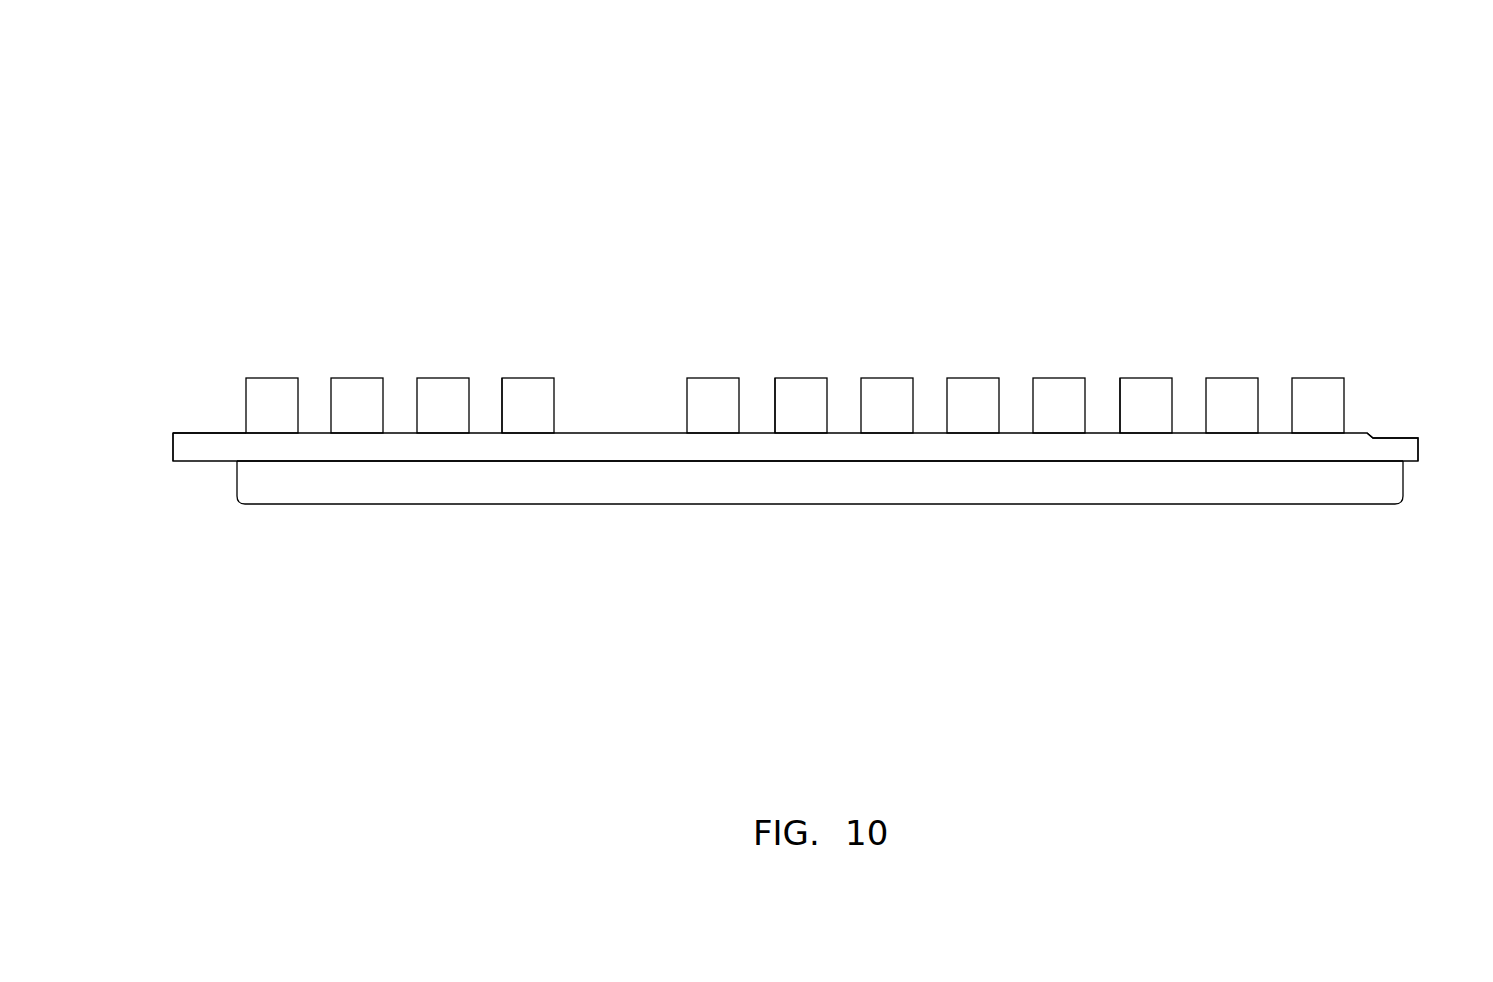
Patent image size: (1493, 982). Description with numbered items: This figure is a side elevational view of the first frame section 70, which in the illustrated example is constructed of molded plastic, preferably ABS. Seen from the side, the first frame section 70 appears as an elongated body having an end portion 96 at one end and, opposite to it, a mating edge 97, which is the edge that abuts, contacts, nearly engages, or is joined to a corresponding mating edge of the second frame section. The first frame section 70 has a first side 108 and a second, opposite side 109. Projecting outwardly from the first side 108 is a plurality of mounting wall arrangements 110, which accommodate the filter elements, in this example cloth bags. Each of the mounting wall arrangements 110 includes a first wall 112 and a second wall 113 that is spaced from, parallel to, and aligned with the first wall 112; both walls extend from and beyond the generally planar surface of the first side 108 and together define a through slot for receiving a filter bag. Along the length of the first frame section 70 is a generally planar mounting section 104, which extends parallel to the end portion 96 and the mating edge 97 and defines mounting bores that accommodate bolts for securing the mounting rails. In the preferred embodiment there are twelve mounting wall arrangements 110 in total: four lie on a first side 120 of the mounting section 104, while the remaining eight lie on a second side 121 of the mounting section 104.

The first frame section 70 is at (526, 177).
The end portion 96 is at (172, 448).
The mating edge 97 is at (1420, 446).
The mounting section 104 is at (618, 432).
The first side 108 is at (203, 433).
The second side 109 is at (258, 461).
The mounting wall arrangements 110 is at (358, 316).
The first wall 112 is at (555, 393).
The second wall 113 is at (500, 393).
The first side of the mounting section 120 is at (392, 450).
The second side of the mounting section 121 is at (1000, 447).